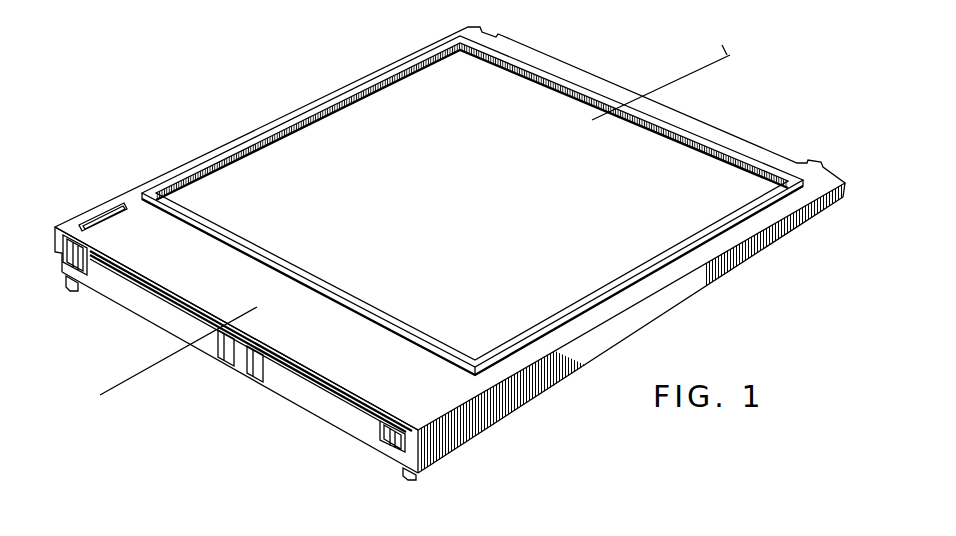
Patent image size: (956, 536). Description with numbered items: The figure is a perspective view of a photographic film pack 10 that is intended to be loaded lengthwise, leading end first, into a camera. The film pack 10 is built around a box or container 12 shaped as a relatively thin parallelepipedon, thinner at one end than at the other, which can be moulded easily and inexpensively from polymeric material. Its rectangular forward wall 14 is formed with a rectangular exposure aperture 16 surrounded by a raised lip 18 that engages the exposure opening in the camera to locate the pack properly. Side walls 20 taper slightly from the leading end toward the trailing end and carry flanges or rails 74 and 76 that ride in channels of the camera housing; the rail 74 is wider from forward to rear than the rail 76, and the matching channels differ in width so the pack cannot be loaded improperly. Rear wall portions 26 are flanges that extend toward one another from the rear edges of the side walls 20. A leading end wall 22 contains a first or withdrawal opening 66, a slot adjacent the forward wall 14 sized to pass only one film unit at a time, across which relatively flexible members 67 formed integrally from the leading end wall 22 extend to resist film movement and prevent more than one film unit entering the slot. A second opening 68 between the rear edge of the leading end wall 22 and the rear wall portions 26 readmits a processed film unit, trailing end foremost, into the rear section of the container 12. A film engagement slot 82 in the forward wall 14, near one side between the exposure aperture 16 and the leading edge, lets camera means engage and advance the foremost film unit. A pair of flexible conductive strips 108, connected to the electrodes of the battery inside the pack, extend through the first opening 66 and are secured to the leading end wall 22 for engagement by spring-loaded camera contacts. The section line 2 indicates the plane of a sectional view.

The section line 2- 2 is at (700, 48).
The film pack 10 is at (253, 108).
The container 12 is at (586, 357).
The forward wall 14 is at (350, 372).
The exposure aperture 16 is at (307, 123).
The raised lip 18 is at (172, 196).
The side walls 20 is at (640, 323).
The leading end wall 22 is at (165, 322).
The rear wall portions 26 is at (73, 289).
The first opening 66 is at (287, 370).
The flexible members 67 is at (78, 261).
The second opening 68 is at (100, 291).
The rail 74 is at (57, 238).
The rail 76 is at (453, 413).
The film engagement slot 82 is at (108, 216).
The conductive strips 108 is at (247, 366).